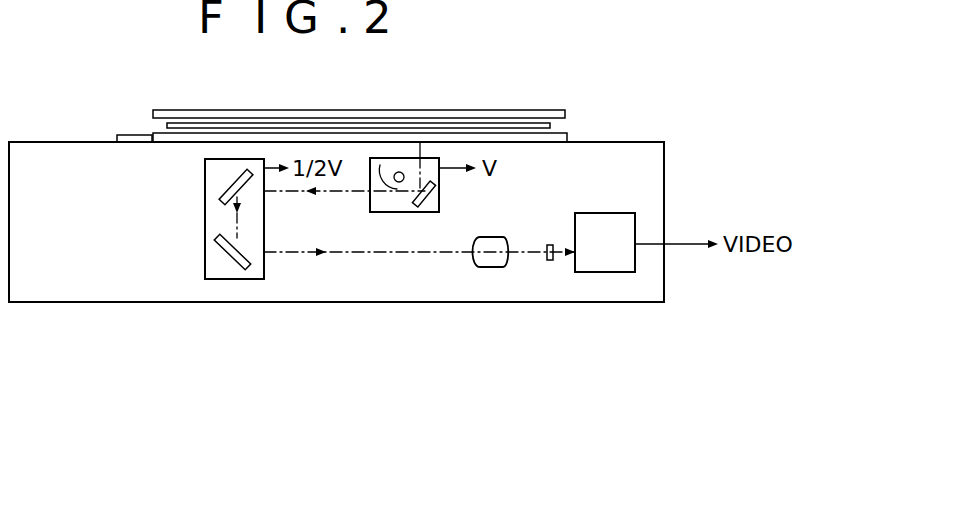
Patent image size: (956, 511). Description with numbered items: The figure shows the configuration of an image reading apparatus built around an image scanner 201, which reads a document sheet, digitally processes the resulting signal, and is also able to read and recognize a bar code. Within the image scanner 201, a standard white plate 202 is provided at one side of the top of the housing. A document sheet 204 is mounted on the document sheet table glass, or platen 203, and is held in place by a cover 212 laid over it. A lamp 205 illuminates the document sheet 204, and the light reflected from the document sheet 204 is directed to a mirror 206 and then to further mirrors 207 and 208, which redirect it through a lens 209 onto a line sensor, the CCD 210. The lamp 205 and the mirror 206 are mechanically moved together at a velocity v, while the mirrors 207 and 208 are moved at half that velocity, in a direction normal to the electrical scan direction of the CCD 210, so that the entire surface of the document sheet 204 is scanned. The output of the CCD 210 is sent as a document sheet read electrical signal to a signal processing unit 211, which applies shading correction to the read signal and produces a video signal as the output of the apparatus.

The image scanner 201 is at (664, 172).
The standard white plate 202 is at (133, 135).
The document sheet table glass (platen) 203 is at (567, 133).
The document sheet 204 is at (490, 123).
The lamp 205 is at (399, 172).
The mirror 206 is at (435, 194).
The mirror 207 is at (222, 200).
The mirror 208 is at (217, 240).
The lens 209 is at (486, 267).
The line sensor (CCD) 210 is at (549, 260).
The signal processing unit 211 is at (615, 262).
The cover 212 is at (247, 110).